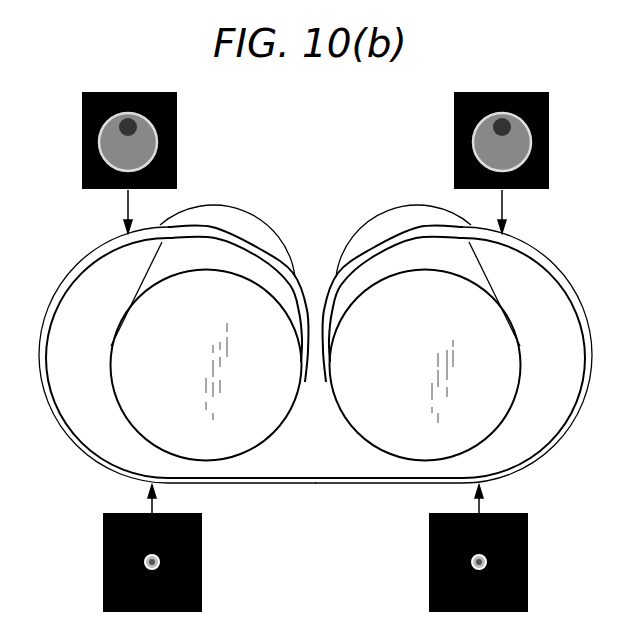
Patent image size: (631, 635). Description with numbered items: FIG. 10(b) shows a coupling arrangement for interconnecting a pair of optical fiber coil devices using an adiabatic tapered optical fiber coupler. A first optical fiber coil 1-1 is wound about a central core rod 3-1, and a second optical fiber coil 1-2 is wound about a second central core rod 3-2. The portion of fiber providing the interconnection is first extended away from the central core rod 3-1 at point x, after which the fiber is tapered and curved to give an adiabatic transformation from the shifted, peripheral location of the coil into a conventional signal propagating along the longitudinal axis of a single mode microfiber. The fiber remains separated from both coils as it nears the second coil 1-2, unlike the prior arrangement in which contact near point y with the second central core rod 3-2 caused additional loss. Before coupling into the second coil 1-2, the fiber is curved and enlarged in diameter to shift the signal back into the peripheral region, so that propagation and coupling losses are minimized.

The first optical fiber coil 1-1 is at (215, 239).
The second optical fiber coil 1-2 is at (437, 238).
The central core rod 3-1 is at (140, 376).
The second central core rod 3-2 is at (487, 369).
The point x is at (246, 251).
The point Y y is at (383, 253).